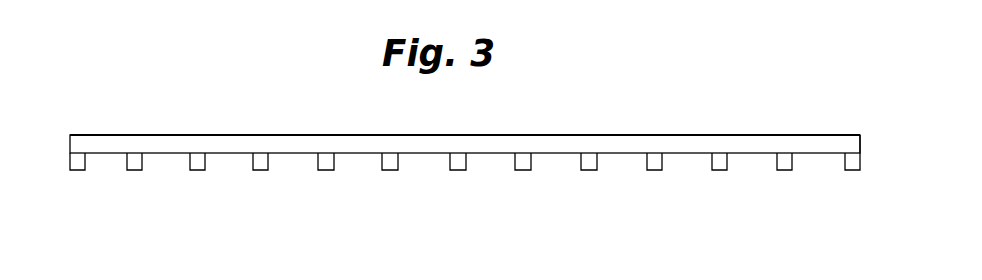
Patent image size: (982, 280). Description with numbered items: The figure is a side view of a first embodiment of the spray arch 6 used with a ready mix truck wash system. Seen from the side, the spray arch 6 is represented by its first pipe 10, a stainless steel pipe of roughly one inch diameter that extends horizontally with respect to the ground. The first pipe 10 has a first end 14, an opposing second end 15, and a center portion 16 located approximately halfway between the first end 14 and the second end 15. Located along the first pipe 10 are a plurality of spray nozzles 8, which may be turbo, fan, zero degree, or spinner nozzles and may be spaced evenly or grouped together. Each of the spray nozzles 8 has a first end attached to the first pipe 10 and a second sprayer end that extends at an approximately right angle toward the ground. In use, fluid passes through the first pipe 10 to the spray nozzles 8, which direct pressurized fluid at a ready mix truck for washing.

The spray arch 6 is at (465, 141).
The spray nozzles 8 is at (647, 170).
The first pipe 10 is at (465, 110).
The first end 14 is at (850, 140).
The second end 15 is at (77, 147).
The center portion 16 is at (492, 142).